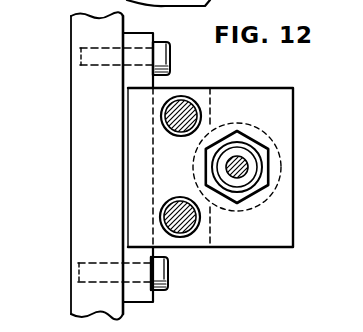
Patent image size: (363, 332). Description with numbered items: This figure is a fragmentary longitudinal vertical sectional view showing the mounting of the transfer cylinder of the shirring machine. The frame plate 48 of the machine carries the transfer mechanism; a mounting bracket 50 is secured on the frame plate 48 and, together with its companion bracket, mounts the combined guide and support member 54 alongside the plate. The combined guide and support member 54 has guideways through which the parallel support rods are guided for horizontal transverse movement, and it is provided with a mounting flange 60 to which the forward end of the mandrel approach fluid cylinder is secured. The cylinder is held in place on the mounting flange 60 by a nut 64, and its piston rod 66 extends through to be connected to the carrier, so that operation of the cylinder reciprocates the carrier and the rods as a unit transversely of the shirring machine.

The frame plate 48 is at (88, 109).
The mounting bracket 50 is at (143, 35).
The combined guide and support member 54 is at (143, 172).
The mounting flange 60 is at (274, 95).
The nut 64 is at (262, 140).
The piston rod 66 is at (187, 104).